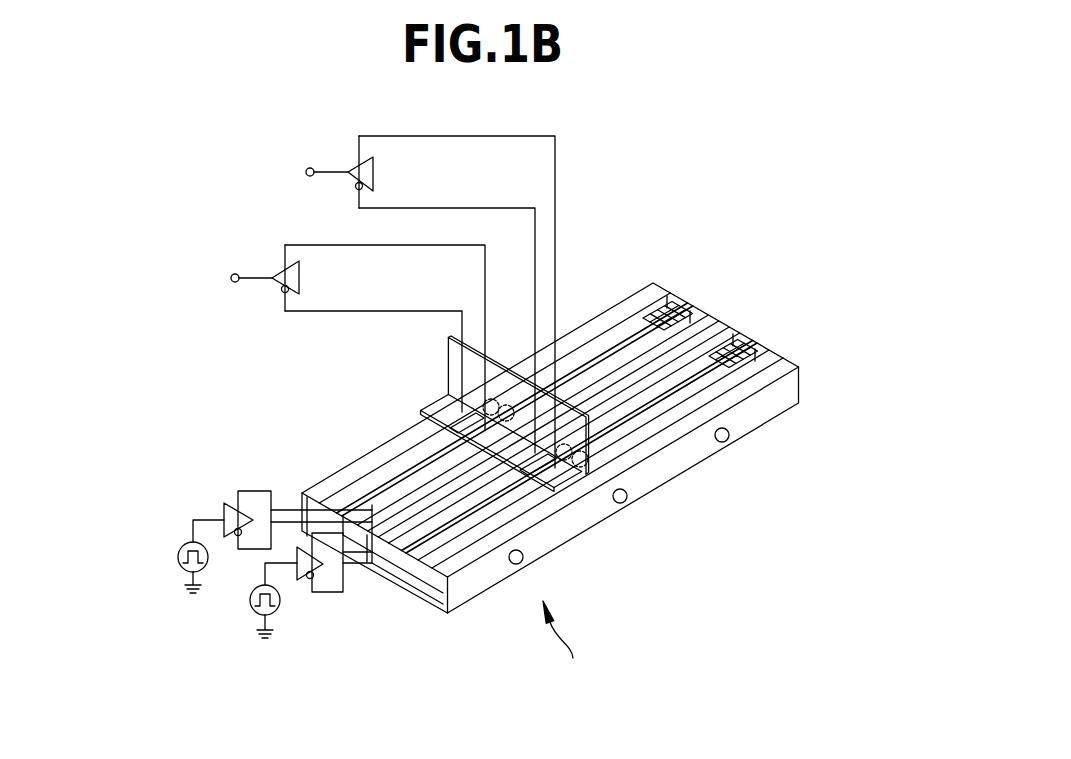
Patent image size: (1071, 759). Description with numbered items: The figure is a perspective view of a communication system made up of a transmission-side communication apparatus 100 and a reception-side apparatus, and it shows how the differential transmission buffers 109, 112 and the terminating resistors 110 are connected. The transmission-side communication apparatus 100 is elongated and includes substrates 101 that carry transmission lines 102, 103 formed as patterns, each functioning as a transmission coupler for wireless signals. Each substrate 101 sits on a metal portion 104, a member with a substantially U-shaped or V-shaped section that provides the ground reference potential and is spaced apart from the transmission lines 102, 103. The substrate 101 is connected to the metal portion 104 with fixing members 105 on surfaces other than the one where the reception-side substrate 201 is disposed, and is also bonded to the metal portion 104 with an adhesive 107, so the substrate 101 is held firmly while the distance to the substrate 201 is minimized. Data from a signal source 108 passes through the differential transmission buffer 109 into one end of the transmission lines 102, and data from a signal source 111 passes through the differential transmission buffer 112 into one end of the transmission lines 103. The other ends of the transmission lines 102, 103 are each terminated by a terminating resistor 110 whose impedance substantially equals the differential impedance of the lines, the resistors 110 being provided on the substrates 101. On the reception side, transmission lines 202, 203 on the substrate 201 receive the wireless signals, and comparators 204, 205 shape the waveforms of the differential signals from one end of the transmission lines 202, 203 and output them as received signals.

The transmission-side communication apparatus 100 is at (570, 645).
The substrate 101 is at (338, 473).
The transmission line 102 is at (638, 323).
The transmission line 103 is at (727, 357).
The metal portion 104 is at (460, 608).
The fixing member 105 is at (724, 443).
The adhesive 107 is at (372, 563).
The signal source 108 is at (178, 557).
The differential transmission buffer 109 is at (222, 515).
The terminating resistor 110 is at (757, 333).
The signal source 111 is at (248, 608).
The differential transmission buffer 112 is at (300, 583).
The substrate 201 is at (437, 407).
The transmission line 202 is at (478, 420).
The transmission line 203 is at (560, 452).
The comparator 204 is at (280, 268).
The comparator 205 is at (352, 167).